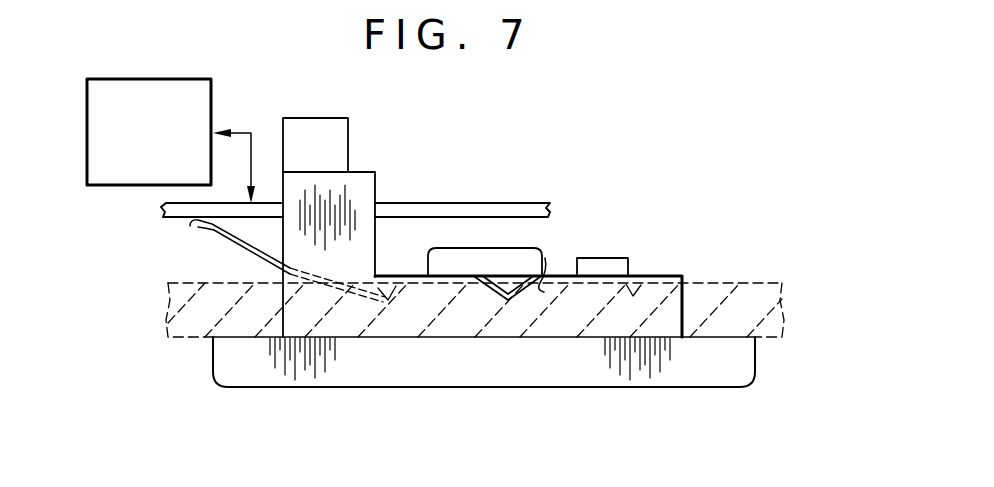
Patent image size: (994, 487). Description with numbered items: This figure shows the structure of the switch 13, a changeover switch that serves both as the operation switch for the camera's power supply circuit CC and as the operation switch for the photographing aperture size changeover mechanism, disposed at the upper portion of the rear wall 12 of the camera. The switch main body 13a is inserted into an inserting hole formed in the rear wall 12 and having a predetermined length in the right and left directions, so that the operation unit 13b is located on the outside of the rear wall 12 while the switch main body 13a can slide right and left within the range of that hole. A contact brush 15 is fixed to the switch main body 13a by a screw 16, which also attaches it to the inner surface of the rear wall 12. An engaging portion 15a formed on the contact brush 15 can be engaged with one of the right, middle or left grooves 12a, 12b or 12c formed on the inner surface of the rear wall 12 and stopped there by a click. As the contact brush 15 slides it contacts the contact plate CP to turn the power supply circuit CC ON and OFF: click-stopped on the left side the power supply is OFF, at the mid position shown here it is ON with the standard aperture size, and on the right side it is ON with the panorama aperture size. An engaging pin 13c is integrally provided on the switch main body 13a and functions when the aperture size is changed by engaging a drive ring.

The rear wall 12 is at (185, 316).
The right groove 12a is at (388, 302).
The middle groove 12b is at (509, 301).
The left groove 12c is at (633, 297).
The switch 13 is at (592, 148).
The switch main body 13a is at (732, 372).
The operation unit 13b is at (457, 388).
The engaging pin 13c is at (335, 118).
The contact brush 15 is at (235, 243).
The engaging portion 15a is at (545, 258).
The screw 16 is at (430, 252).
The power supply circuit CC is at (214, 103).
The contact plate CP is at (396, 202).